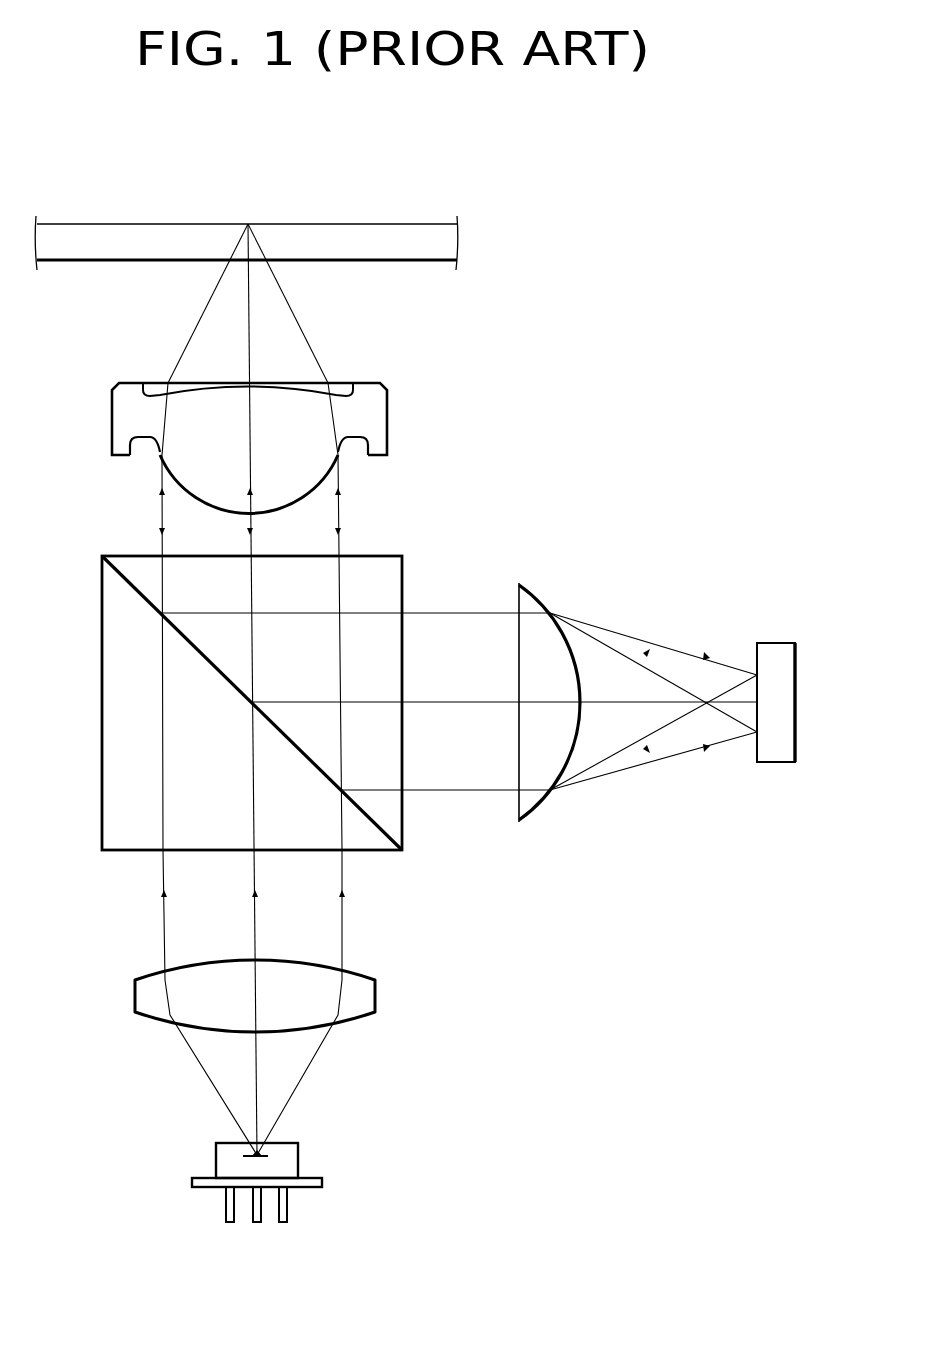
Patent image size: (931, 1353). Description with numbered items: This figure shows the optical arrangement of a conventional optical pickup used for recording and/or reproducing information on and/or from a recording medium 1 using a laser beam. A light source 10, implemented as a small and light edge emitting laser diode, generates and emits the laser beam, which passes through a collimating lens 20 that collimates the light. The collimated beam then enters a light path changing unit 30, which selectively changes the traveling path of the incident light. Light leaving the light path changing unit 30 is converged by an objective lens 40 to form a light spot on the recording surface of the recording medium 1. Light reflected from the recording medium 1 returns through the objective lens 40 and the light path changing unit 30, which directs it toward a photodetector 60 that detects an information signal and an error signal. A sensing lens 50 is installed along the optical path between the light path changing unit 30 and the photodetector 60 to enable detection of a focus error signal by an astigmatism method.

The recording medium 1 is at (385, 218).
The light source 10 is at (298, 1160).
The collimating lens 20 is at (368, 995).
The light path changing unit 30 is at (400, 556).
The objective lens 40 is at (387, 427).
The sensing lens 50 is at (538, 603).
The photodetector 60 is at (777, 643).